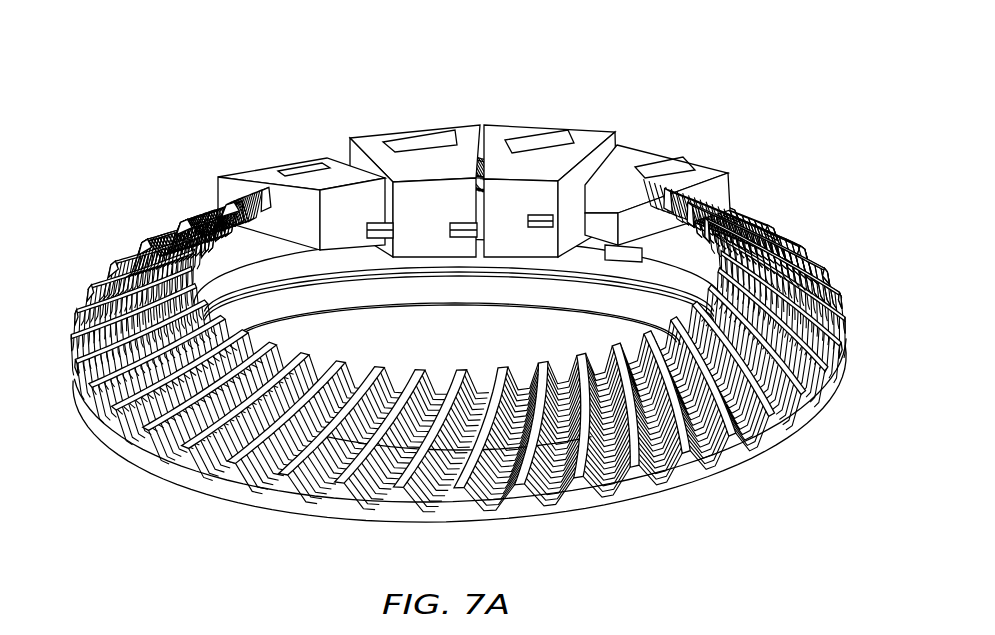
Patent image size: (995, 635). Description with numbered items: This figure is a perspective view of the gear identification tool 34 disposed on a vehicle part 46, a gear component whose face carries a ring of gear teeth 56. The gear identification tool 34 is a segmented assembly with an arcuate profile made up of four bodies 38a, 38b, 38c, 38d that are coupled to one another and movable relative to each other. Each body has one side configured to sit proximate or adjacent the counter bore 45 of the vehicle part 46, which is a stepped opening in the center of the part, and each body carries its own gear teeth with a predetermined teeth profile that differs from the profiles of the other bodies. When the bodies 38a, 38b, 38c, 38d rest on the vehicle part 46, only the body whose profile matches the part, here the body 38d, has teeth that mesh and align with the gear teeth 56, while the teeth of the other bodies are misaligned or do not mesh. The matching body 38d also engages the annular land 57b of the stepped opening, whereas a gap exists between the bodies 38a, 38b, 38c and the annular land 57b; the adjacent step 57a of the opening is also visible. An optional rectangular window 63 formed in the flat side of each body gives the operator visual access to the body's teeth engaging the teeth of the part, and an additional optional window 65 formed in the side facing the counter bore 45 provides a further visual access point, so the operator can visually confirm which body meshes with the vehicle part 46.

The gear identification tool 34 is at (458, 289).
The body 38a is at (284, 153).
The body 38b is at (433, 126).
The body 38c is at (538, 114).
The body 38d is at (680, 143).
The counter bore 45 is at (586, 338).
The vehicle part 46 is at (150, 476).
The gear teeth 56 is at (560, 457).
The inner lip step 57a is at (428, 283).
The annular land 57b is at (258, 300).
The window 63 is at (400, 138).
The window 65 is at (455, 240).